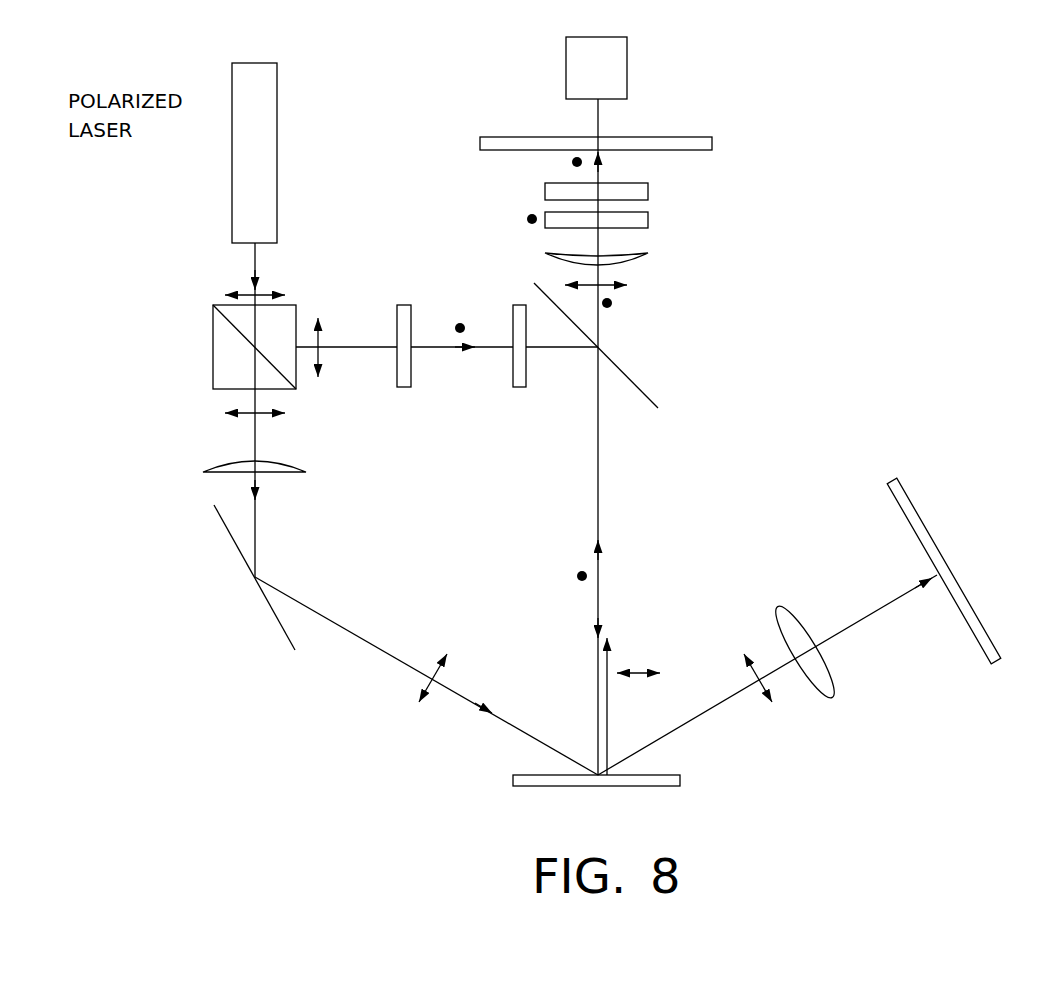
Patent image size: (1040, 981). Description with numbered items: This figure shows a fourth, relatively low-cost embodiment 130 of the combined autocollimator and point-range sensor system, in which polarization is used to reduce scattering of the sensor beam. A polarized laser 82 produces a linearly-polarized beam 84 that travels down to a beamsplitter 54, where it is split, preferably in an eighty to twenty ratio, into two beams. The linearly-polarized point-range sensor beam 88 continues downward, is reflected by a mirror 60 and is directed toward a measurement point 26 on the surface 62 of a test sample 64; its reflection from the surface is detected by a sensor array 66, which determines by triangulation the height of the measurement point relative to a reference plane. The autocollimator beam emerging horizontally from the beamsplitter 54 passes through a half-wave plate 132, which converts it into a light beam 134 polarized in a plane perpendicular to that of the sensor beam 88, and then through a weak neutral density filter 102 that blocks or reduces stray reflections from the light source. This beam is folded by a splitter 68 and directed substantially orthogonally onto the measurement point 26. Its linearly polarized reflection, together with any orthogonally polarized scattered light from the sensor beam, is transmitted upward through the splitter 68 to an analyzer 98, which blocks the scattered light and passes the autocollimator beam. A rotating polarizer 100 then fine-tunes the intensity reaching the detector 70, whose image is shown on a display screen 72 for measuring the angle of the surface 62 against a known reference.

The polarized laser 82 is at (277, 112).
The linearly-polarized beam 84 is at (255, 257).
The beamsplitter 54 is at (213, 345).
The point-range sensor beam 88 is at (255, 443).
The mirror 60 is at (232, 540).
The surface 62 is at (657, 775).
The test sample 64 is at (538, 788).
The measurement point 26 is at (605, 772).
The sensor array 66 is at (920, 515).
The splitter 68 is at (642, 385).
The analyzer 98 is at (648, 222).
The rotating polarizer 100 is at (545, 194).
The detector 70 is at (680, 150).
The display screen 72 is at (627, 64).
The embodiment 130 is at (933, 263).
The half-wave plate 132 is at (403, 305).
The light beam 134 is at (490, 349).
The weak neutral density filter 102 is at (523, 387).